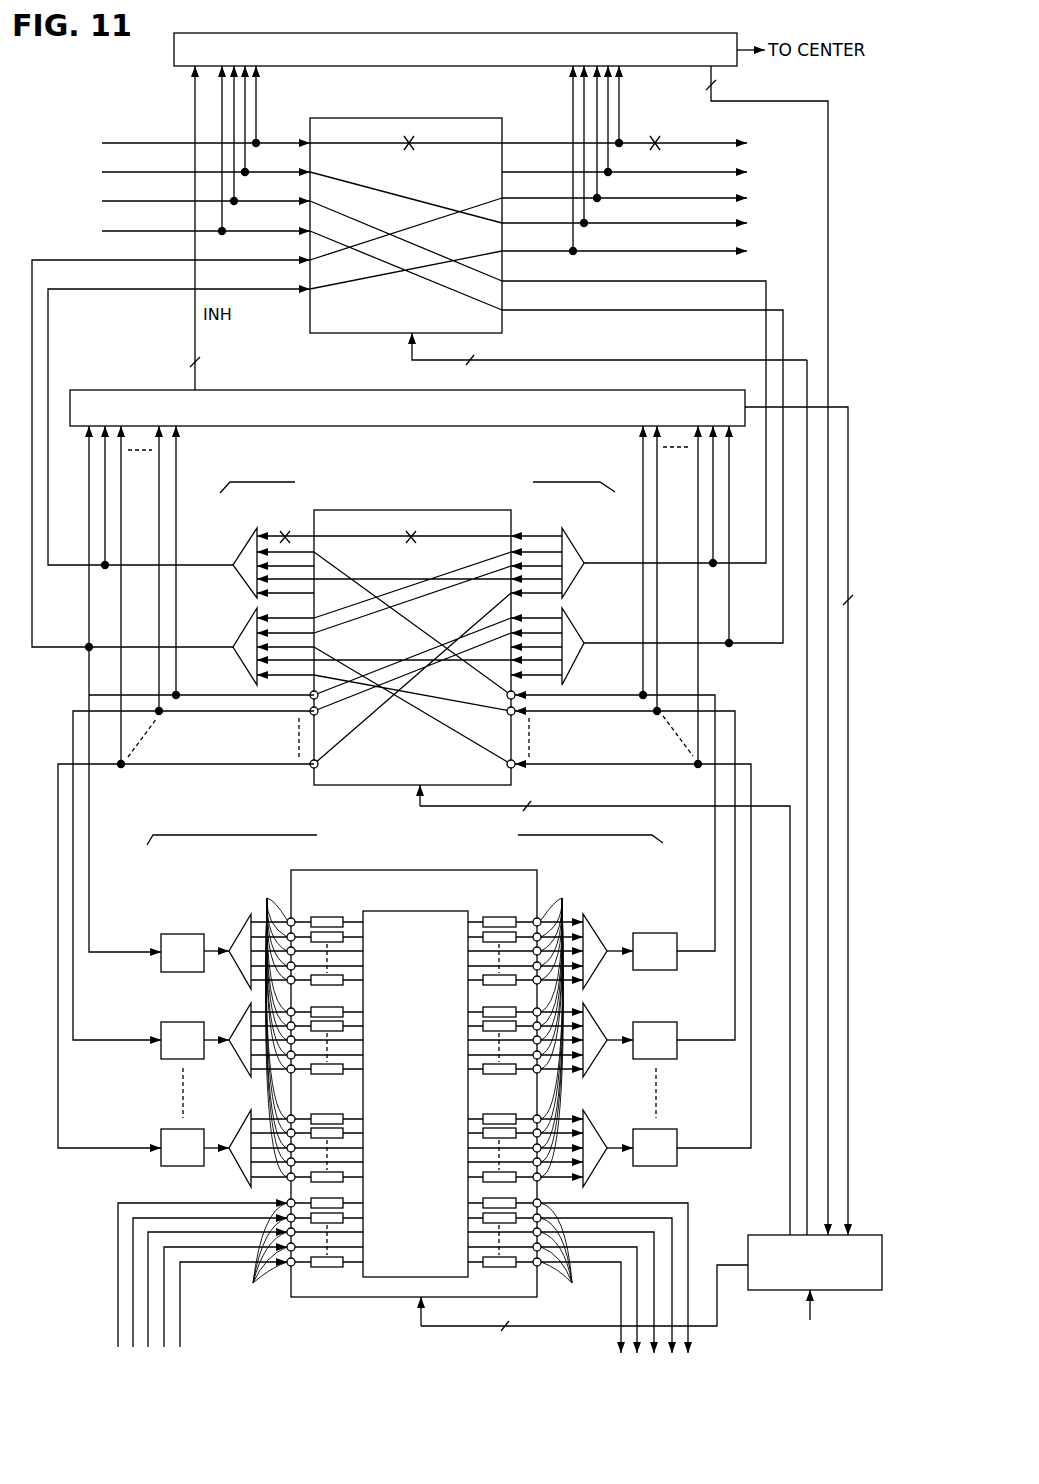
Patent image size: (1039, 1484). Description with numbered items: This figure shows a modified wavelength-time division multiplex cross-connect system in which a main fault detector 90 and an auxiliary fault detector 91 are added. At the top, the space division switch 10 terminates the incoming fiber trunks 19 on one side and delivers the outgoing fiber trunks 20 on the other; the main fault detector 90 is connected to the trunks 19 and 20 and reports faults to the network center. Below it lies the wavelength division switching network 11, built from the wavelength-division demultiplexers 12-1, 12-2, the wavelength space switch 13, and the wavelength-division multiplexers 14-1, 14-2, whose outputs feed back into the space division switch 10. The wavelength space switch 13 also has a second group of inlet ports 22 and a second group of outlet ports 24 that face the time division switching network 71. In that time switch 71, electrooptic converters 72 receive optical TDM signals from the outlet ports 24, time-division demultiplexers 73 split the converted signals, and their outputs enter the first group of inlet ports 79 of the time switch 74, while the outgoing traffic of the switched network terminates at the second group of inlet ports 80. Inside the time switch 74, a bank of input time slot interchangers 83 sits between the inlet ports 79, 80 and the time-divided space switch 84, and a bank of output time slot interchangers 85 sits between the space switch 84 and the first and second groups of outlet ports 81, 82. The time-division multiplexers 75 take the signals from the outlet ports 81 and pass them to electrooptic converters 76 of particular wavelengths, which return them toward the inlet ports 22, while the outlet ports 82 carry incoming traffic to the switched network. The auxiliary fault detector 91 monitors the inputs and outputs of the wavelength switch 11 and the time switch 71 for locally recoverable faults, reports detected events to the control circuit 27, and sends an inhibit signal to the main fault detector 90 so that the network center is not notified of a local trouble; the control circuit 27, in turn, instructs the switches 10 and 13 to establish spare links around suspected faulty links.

The main fault detector 90 is at (510, 37).
The space division switch 10 is at (470, 121).
The incoming trunks 19 is at (117, 158).
The fiber trunks 20 is at (727, 160).
The auxiliary fault detector 91 is at (216, 390).
The wavelength division switching network 11 is at (411, 628).
The wavelength space switch 13 is at (509, 525).
The wavelength-division multiplexer 14-1 is at (248, 535).
The wavelength-division multiplexer 14-2 is at (238, 635).
The wavelength-division demultiplexer 12-1 is at (563, 533).
The wavelength-division demultiplexer 12-2 is at (578, 625).
The second group of inlet ports 22 is at (505, 763).
The second group of outlet ports 24 is at (320, 762).
The time division switching network 71 is at (433, 1089).
The electrooptic converter 72 is at (177, 933).
The time-division demultiplexer 73 is at (241, 926).
The time switch 74 is at (541, 880).
The time-division multiplexer 75 is at (590, 928).
The electrooptic converter 76 is at (650, 933).
The first group of inlet ports 79 is at (276, 1029).
The second group of inlet ports 80 is at (268, 1254).
The first group of outlet ports 81 is at (558, 1028).
The second group of outlet ports 82 is at (563, 1256).
The input time slot interchangers 83 is at (340, 918).
The time-divided space switch 84 is at (393, 911).
The output time slot interchangers 85 is at (483, 910).
The control circuit 27 is at (762, 1235).